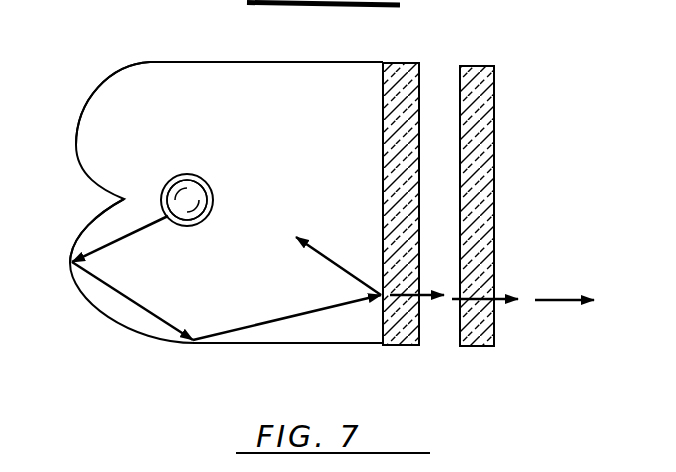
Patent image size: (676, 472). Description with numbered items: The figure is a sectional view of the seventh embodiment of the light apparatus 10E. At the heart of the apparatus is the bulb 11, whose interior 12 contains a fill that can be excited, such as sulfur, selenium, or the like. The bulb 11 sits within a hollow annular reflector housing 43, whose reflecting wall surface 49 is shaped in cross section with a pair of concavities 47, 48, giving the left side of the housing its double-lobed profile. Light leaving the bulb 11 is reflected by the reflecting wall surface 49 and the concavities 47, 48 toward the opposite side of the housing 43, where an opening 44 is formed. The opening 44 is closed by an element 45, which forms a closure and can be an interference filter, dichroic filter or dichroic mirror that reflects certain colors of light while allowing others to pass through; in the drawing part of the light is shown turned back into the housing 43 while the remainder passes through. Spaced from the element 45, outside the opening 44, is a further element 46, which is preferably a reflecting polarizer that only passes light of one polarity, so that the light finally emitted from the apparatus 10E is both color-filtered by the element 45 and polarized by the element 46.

The light apparatus 10E is at (150, 58).
The bulb 11 is at (212, 188).
The interior 12 is at (191, 194).
The hollow annular reflector housing 43 is at (285, 62).
The opening 44 is at (364, 108).
The element 45 is at (395, 347).
The element 46 is at (491, 66).
The concavity 47 is at (93, 131).
The concavity 48 is at (120, 269).
The reflecting wall surface 49 is at (311, 65).